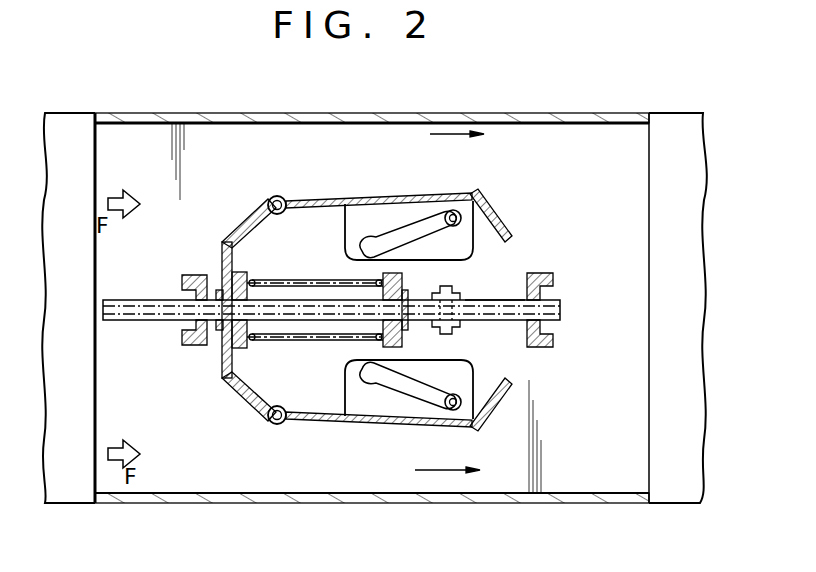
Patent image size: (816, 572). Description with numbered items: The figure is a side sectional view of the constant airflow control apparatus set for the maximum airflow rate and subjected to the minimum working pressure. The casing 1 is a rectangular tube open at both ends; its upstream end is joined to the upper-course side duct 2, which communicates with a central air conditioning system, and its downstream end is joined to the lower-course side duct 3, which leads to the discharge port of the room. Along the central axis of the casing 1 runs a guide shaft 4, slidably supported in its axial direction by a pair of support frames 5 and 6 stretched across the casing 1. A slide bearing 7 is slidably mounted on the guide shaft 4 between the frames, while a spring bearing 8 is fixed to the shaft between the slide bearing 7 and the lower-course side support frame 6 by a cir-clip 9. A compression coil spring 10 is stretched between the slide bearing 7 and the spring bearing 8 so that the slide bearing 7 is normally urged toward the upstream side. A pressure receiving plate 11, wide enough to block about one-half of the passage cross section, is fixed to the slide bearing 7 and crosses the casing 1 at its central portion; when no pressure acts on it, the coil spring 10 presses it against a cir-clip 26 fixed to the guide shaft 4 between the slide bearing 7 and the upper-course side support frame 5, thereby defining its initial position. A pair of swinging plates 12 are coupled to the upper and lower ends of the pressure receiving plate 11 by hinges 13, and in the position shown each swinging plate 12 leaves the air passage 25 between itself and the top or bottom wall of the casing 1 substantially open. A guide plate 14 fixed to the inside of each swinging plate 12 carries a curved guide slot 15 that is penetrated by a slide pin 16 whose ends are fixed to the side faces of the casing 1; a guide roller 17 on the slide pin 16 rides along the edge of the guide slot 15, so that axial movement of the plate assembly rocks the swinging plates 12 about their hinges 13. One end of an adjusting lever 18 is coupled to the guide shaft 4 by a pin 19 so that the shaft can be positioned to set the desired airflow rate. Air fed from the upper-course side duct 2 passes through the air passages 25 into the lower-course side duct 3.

The casing 1 is at (244, 113).
The upper-course side duct 2 is at (62, 113).
The lower-course side duct 3 is at (668, 113).
The guide shaft 4 is at (142, 322).
The support frame 5 is at (194, 275).
The support frame 6 is at (544, 272).
The slide bearing 7 is at (244, 272).
The spring bearing 8 is at (409, 328).
The cir-clip 9 is at (404, 296).
The compression coil spring 10 is at (300, 342).
The pressure receiving plate 11 is at (244, 236).
The swinging plate 12 is at (336, 200).
The hinge 13 is at (277, 196).
The guide plate 14 is at (396, 214).
The guide slot 15 is at (438, 222).
The slide pin 16 is at (498, 230).
The guide roller 17 is at (462, 218).
The adjusting lever 18 is at (486, 299).
The pin 19 is at (446, 292).
The air passage 25 is at (380, 134).
The cir-clip 26 is at (218, 331).